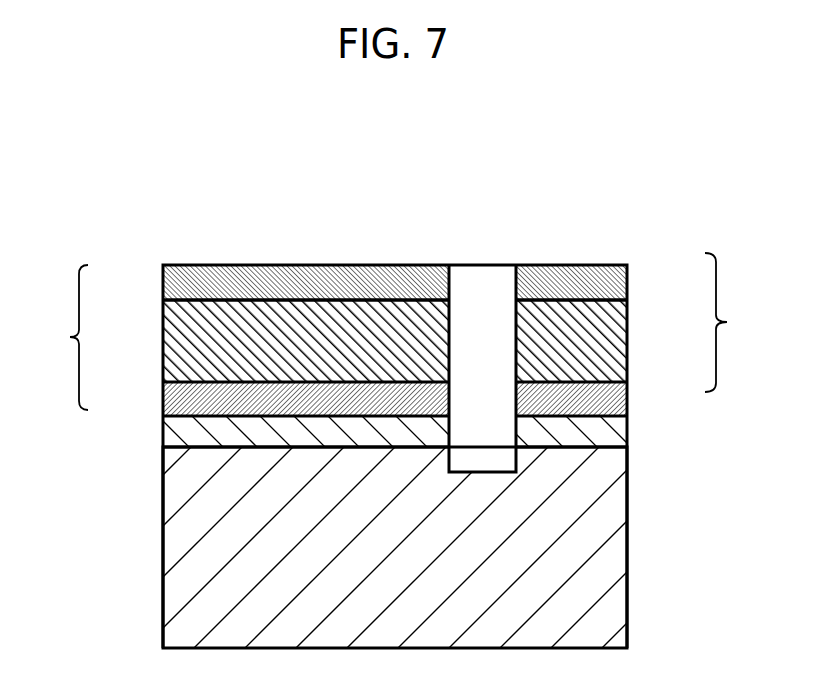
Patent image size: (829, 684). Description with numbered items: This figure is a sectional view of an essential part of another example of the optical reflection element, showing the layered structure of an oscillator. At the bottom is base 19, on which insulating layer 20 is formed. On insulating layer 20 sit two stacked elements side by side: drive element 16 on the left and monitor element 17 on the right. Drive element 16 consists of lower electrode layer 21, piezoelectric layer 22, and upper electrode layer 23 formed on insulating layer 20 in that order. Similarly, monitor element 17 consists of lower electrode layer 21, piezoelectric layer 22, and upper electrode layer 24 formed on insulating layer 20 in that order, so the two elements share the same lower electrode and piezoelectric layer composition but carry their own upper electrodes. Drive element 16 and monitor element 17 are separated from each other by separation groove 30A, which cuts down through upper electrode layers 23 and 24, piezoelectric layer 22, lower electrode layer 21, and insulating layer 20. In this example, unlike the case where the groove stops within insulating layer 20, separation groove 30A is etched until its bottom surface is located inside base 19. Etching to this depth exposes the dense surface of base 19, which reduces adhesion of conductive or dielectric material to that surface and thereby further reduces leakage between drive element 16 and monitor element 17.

The drive element 16 is at (53, 337).
The monitor element 17 is at (734, 322).
The base 19 is at (177, 556).
The insulating layer 20 is at (180, 436).
The lower electrode layer 21 is at (183, 400).
The piezoelectric layer 22 is at (180, 330).
The upper electrode layer 23 is at (183, 280).
The upper electrode layer 24 is at (621, 278).
The separation groove 30A is at (483, 287).